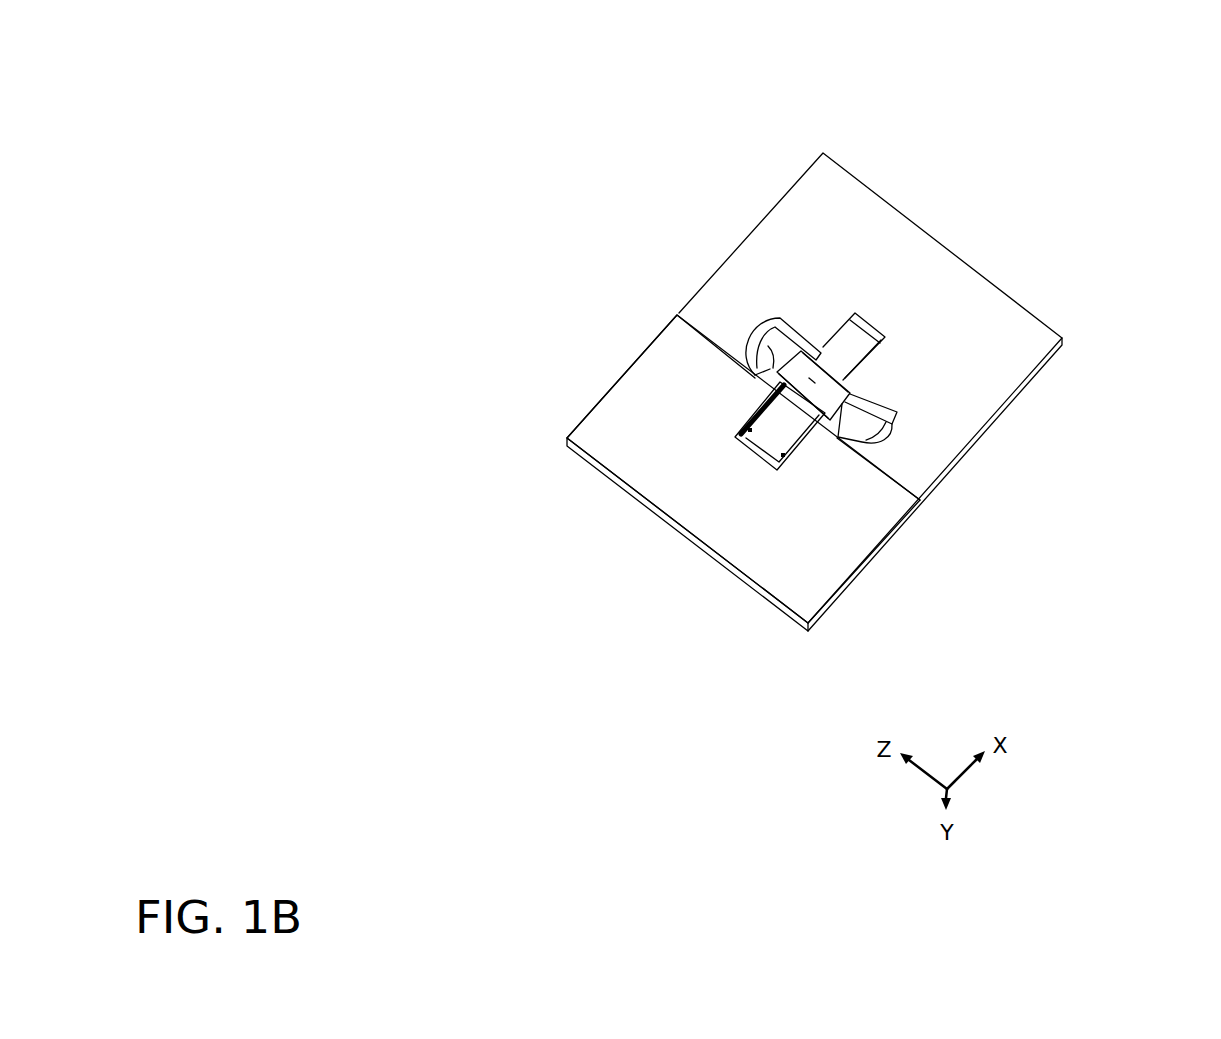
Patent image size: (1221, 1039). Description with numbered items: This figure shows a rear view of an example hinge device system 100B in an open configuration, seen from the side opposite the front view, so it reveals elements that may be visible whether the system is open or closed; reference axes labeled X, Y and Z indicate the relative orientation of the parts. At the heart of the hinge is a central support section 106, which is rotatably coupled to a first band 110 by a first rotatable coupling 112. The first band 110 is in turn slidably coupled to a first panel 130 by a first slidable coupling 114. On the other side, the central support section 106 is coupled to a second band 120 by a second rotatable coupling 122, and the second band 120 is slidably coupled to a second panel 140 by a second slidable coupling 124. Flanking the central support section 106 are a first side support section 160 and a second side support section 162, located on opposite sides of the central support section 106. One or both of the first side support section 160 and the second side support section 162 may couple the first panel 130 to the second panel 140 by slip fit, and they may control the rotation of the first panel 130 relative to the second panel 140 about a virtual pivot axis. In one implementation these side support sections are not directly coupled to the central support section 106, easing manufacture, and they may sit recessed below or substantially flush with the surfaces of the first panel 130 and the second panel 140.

The hinge device system 100B is at (748, 101).
The central support section 106 is at (812, 380).
The first band 110 is at (843, 356).
The first rotatable coupling 112 is at (858, 380).
The first slidable coupling 114 is at (863, 317).
The second band 120 is at (782, 420).
The second rotatable coupling 122 is at (798, 407).
The second slidable coupling 124 is at (758, 432).
The first panel 130 is at (1023, 353).
The second panel 140 is at (633, 405).
The first side support section 160 is at (770, 343).
The second side support section 162 is at (863, 423).